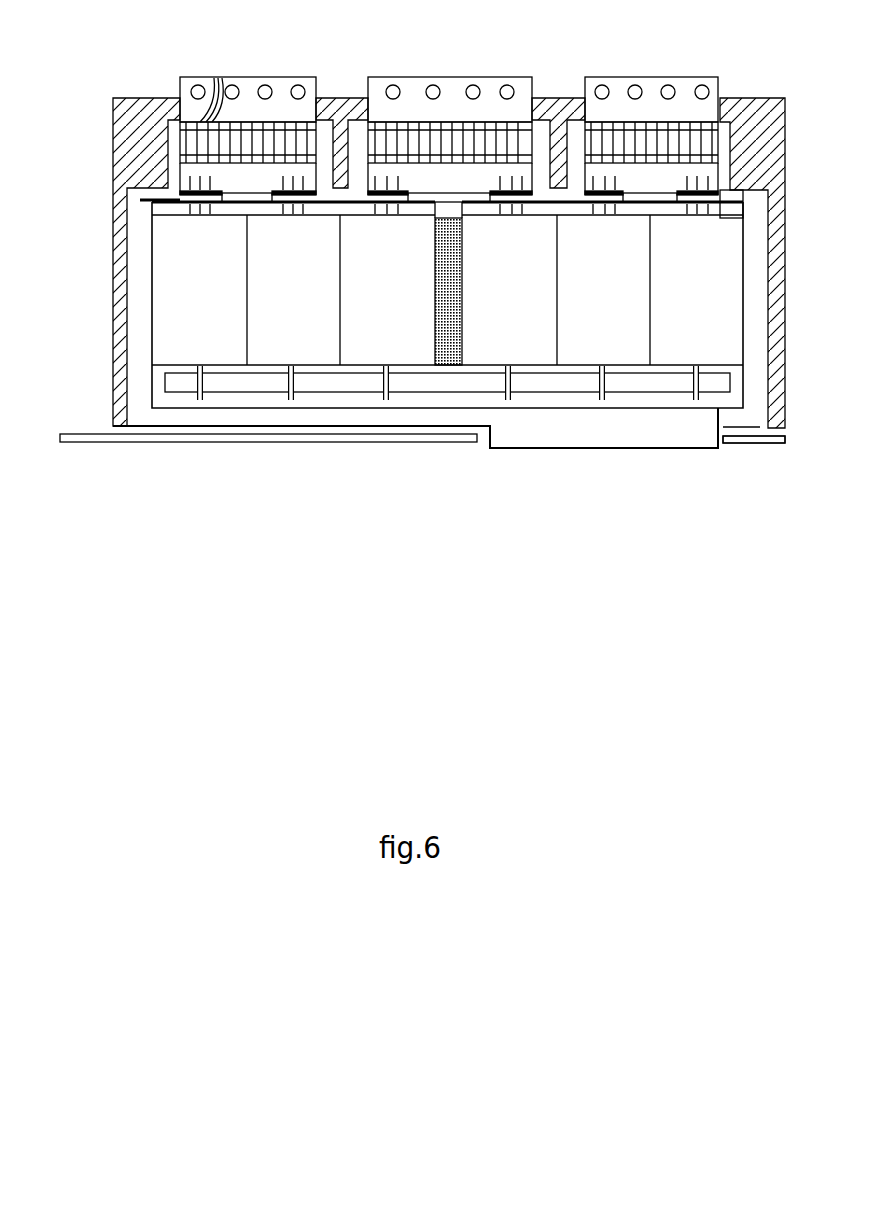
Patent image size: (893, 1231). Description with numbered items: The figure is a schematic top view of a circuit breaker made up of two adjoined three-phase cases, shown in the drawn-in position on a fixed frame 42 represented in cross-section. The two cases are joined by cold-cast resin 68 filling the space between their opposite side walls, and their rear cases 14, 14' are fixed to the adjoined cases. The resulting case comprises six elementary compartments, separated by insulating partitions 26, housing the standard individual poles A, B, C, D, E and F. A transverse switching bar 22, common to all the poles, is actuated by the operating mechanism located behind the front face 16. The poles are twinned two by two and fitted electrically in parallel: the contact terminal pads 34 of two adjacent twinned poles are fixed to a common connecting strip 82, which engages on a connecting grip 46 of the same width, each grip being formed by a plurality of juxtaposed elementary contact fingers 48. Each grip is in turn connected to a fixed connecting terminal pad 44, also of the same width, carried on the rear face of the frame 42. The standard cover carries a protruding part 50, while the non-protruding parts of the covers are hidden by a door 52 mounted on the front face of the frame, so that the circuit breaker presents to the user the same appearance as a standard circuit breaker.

The rear case 14 is at (671, 112).
The rear case 14' is at (387, 225).
The front face 16 is at (733, 372).
The transverse switching bar 22 is at (262, 386).
The insulating partitions 26 is at (247, 262).
The contact terminal pads 34 is at (180, 202).
The fixed frame 42 is at (340, 118).
The fixed connecting terminal pads 44 is at (485, 92).
The connecting grips 46 is at (182, 137).
The elementary contact fingers 48 is at (214, 78).
The protruding part 50 is at (517, 450).
The door 52 is at (333, 445).
The resin 68 is at (440, 357).
The common connecting strip 82 is at (249, 179).